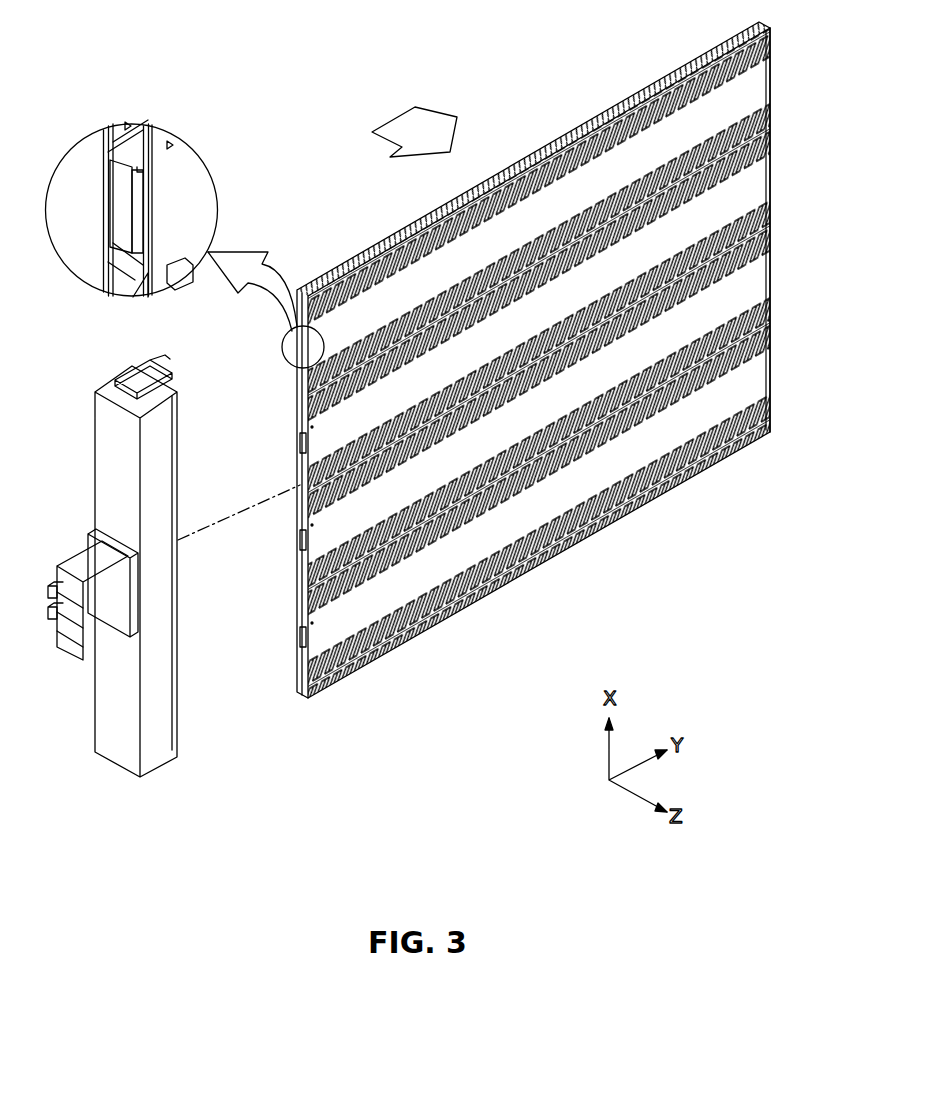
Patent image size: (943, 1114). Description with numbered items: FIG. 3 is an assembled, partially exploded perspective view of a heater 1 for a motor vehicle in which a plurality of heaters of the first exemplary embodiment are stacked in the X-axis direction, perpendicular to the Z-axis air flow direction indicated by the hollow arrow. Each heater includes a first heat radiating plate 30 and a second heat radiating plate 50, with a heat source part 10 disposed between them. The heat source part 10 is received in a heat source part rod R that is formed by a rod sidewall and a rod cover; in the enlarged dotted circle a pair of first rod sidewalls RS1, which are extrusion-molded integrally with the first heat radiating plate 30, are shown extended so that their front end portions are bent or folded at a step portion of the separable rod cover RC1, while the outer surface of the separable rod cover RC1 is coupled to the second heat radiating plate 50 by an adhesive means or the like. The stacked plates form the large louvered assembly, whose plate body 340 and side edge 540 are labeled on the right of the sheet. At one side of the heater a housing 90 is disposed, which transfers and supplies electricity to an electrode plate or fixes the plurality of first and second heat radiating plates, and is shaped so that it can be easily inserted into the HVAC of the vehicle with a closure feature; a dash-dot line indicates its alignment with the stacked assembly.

The display device 1 is at (93, 68).
The heat source part 10 is at (112, 188).
The first heat radiating plate 30 is at (82, 203).
The second heat radiating plate 50 is at (192, 233).
The first rod sidewall RS1 is at (132, 148).
The separable rod cover RC1 is at (142, 207).
The heat source part rod R is at (210, 183).
The louvered heat dissipation plate 340 is at (543, 146).
The plate side edge 540 is at (771, 51).
The housing 90 is at (138, 834).